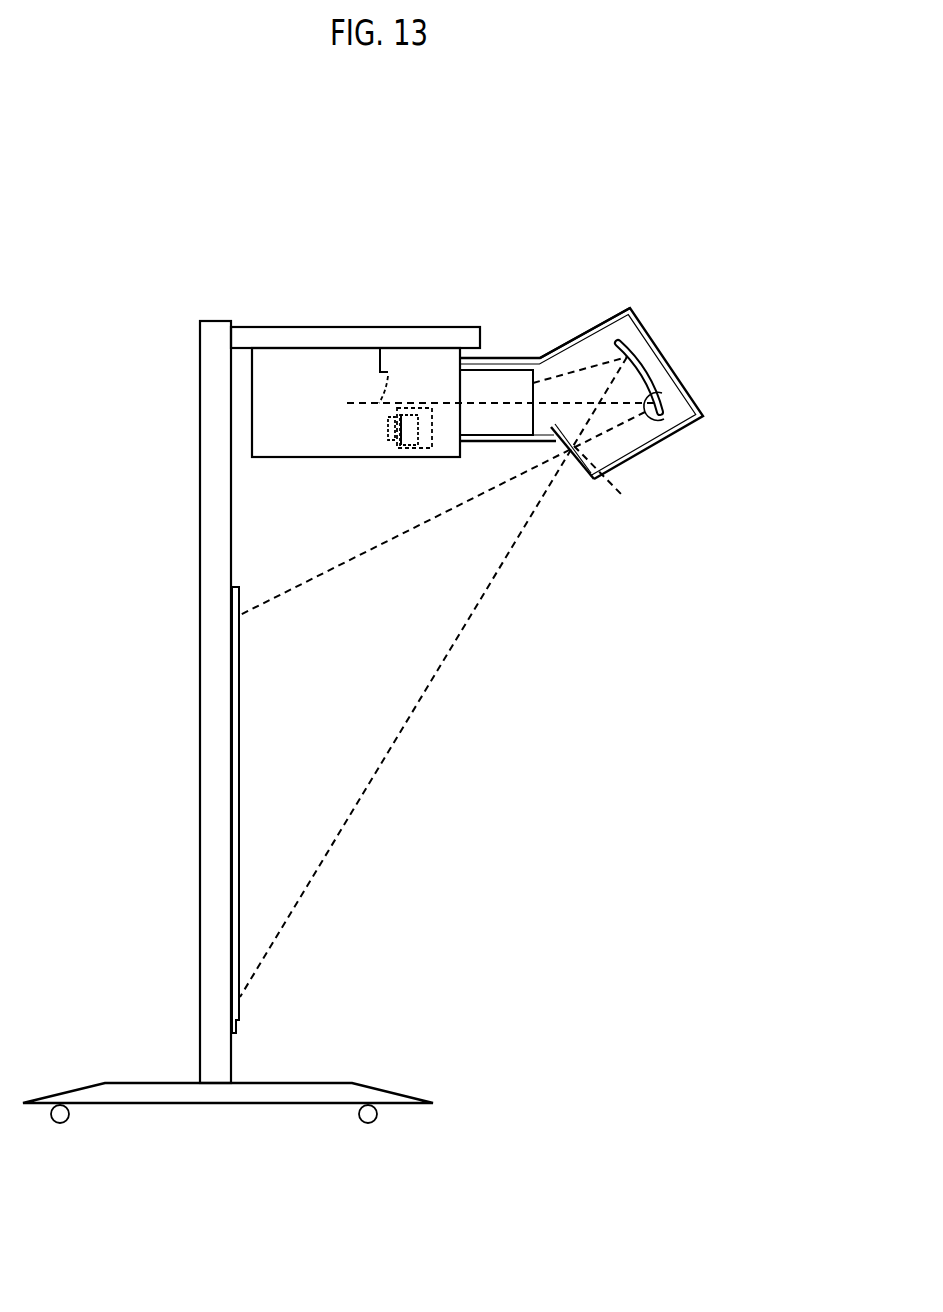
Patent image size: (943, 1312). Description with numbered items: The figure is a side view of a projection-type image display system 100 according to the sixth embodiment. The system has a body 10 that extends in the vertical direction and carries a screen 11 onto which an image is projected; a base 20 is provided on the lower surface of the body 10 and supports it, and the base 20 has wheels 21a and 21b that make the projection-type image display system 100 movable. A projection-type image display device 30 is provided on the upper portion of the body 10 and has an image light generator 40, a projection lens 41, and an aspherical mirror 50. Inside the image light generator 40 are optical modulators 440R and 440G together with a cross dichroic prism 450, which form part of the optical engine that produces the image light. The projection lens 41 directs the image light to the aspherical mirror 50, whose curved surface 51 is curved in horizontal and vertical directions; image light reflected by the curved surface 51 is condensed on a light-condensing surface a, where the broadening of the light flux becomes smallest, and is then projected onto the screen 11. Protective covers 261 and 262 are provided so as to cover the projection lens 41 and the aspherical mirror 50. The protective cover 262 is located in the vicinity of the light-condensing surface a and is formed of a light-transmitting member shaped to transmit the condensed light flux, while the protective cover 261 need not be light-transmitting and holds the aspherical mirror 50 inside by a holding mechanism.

The projection-type image display system 100 is at (487, 182).
The body 10 is at (212, 827).
The screen 11 is at (240, 1017).
The base 20 is at (332, 1093).
The wheel 21a is at (60, 1123).
The wheel 21b is at (368, 1123).
The image light generator 40 is at (334, 346).
The projection lens 41 is at (489, 395).
The optical modulator 440G is at (388, 429).
The optical modulator 440R is at (405, 432).
The cross dichroic prism 450 is at (433, 450).
The projection-type image display device 30 is at (637, 535).
The protective cover 261 is at (602, 320).
The protective cover 262 is at (590, 481).
The aspherical mirror 50 is at (660, 358).
The curved surface 51 is at (664, 419).
The light-condensing surface a is at (607, 480).